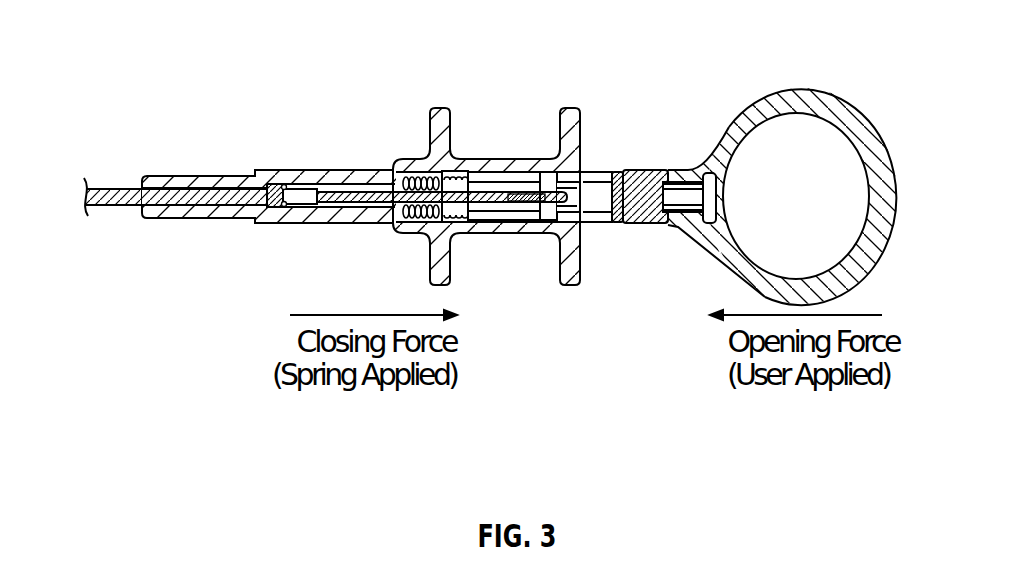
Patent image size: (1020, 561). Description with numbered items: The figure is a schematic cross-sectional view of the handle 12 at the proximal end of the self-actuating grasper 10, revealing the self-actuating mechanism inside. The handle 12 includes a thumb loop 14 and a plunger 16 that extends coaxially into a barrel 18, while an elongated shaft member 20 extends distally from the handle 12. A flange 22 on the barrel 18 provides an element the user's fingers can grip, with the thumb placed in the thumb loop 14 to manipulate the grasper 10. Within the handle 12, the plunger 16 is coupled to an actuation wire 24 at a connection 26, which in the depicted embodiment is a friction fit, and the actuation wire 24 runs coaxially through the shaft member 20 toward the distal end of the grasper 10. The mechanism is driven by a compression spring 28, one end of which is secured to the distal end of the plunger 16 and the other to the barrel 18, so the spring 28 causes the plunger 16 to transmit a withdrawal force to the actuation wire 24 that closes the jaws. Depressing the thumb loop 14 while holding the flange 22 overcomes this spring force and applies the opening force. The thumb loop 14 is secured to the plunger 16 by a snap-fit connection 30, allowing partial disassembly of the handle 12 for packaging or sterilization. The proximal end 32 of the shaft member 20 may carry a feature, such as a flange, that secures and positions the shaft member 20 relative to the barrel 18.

The grasper 10 is at (309, 74).
The handle 12 is at (479, 71).
The thumb loop 14 is at (857, 108).
The plunger 16 is at (602, 172).
The barrel 18 is at (345, 170).
The shaft member 20 is at (130, 188).
The flange 22 is at (498, 159).
The actuation wire 24 is at (347, 203).
The connection 26 is at (527, 203).
The compression spring 28 is at (417, 181).
The snap-fit connection 30 is at (683, 182).
The proximal end of shaft member 32 is at (275, 184).